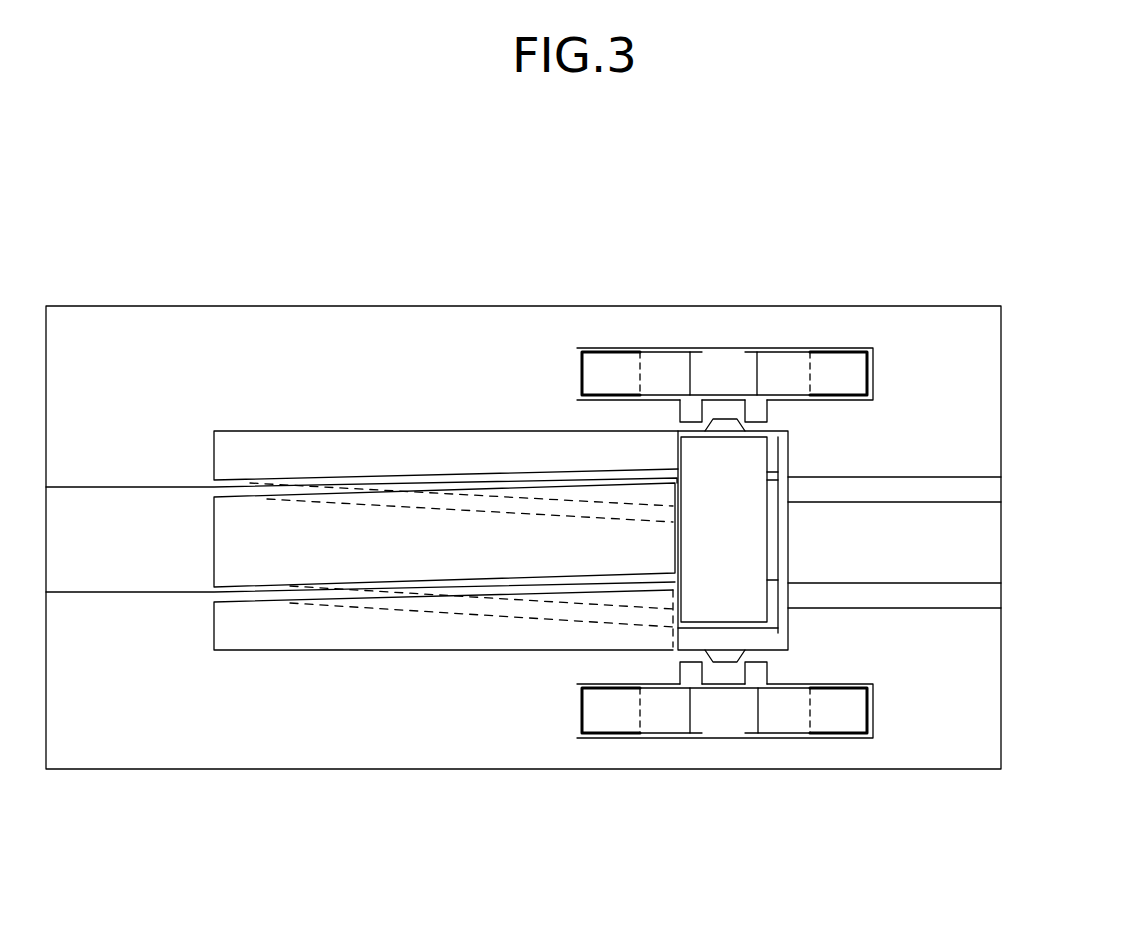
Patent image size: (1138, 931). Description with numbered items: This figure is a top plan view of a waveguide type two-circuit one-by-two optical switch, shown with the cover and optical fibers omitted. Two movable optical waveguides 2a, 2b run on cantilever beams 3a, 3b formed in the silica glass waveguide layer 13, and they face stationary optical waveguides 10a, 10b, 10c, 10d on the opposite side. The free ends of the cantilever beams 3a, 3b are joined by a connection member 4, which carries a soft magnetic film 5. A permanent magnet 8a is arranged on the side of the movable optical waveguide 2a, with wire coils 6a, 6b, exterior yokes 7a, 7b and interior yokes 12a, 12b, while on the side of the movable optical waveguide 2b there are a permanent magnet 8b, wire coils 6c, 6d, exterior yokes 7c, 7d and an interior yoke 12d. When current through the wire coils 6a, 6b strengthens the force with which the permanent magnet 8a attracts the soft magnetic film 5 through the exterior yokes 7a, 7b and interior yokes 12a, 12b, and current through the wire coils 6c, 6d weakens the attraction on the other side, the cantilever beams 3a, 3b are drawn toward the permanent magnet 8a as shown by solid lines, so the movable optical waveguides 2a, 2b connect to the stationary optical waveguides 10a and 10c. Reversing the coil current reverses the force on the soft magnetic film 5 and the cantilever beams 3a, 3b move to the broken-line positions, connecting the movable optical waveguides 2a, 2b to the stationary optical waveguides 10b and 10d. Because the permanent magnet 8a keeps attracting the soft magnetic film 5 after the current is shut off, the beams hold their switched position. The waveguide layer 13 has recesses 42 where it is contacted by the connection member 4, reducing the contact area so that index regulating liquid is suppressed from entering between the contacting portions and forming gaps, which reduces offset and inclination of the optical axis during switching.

The movable optical waveguide 2a is at (176, 487).
The movable optical waveguide 2b is at (108, 592).
The cantilever beam 3a is at (491, 487).
The cantilever beam 3b is at (355, 600).
The connection member 4 is at (773, 452).
The soft magnetic film 5 is at (695, 505).
The wire coil 6a is at (590, 347).
The wire coil 6b is at (857, 348).
The wire coil 6c is at (590, 738).
The wire coil 6d is at (862, 738).
The exterior yoke 7a is at (655, 365).
The exterior yoke 7b is at (795, 365).
The exterior yoke 7c is at (655, 718).
The exterior yoke 7d is at (797, 718).
The permanent magnet 8a is at (722, 360).
The permanent magnet 8b is at (722, 715).
The stationary optical waveguide 10a is at (985, 477).
The stationary optical waveguide 10b is at (985, 502).
The stationary optical waveguide 10c is at (984, 583).
The stationary optical waveguide 10d is at (984, 608).
The interior yoke 12a is at (682, 348).
The interior yoke 12b is at (752, 348).
The interior yoke 12d is at (680, 738).
The silica glass waveguide layer 13 is at (245, 347).
The recess 42 is at (723, 430).